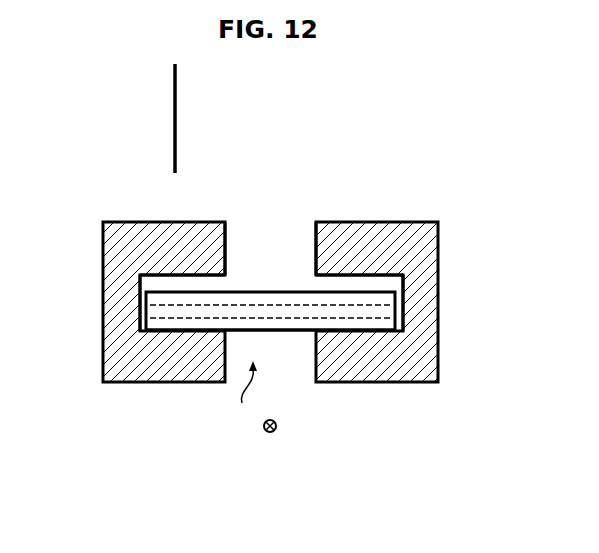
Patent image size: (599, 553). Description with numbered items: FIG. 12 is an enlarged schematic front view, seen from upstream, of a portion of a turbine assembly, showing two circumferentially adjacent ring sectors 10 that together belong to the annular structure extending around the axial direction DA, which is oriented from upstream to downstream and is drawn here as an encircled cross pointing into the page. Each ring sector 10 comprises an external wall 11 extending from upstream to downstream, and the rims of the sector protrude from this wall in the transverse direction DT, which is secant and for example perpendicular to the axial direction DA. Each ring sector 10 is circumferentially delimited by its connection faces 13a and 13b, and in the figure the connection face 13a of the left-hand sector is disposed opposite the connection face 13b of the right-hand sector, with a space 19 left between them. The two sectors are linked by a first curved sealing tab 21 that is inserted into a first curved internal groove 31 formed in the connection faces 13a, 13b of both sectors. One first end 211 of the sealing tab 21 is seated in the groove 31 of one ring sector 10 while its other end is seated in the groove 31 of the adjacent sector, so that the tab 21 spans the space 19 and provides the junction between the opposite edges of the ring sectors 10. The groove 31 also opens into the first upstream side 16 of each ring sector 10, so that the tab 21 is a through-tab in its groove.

The ring sector 10 is at (158, 248).
The external wall 11 is at (167, 353).
The first upstream side 16 is at (175, 272).
The connection face 13a is at (226, 248).
The connection face 13b is at (315, 250).
The first curved internal groove 31 is at (172, 285).
The first curved sealing tab 21 is at (273, 312).
The first end of the first sealing tab 211 is at (298, 328).
The space 19 is at (244, 394).
The transverse direction DT is at (176, 119).
The axial direction DA is at (277, 428).